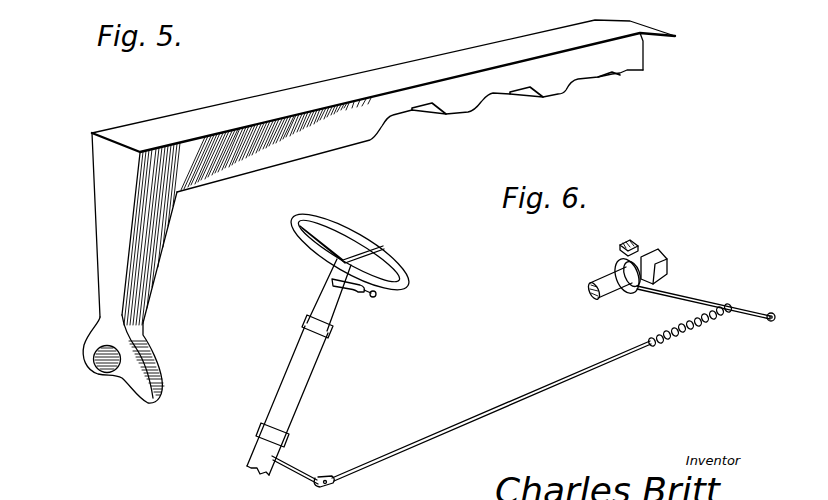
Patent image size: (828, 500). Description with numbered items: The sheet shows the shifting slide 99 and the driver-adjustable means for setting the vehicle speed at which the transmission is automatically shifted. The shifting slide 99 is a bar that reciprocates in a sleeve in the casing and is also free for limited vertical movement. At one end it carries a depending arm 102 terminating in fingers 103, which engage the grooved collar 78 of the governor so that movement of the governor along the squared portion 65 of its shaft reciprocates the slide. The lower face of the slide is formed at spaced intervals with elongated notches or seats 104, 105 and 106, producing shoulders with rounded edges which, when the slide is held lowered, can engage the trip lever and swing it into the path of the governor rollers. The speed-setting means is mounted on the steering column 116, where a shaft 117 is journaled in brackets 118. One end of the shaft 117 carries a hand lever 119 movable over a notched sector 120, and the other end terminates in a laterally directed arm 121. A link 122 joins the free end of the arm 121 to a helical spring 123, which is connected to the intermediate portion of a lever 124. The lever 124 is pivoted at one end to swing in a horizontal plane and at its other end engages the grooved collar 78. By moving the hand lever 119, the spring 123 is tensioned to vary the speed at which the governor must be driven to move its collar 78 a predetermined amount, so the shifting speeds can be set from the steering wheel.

In FIG. 5, the shifting slide 99 is at (302, 92).
In FIG. 5, the depending arm 102 is at (110, 223).
In FIG. 6, the depending arm 102 is at (636, 248).
In FIG. 5, the fingers 103 is at (165, 370).
In FIG. 6, the fingers 103 is at (658, 260).
In FIG. 5, the notch or seat 104 is at (597, 78).
In FIG. 5, the notch or seat 105 is at (503, 97).
In FIG. 5, the notch or seat 106 is at (411, 113).
In FIG. 6, the steering column 116 is at (292, 372).
In FIG. 6, the shaft 117 is at (305, 388).
In FIG. 6, the brackets 118 is at (306, 318).
In FIG. 6, the hand lever 119 is at (376, 297).
In FIG. 6, the notched sector 120 is at (347, 291).
In FIG. 6, the laterally directed arm 121 is at (303, 468).
In FIG. 6, the link 122 is at (515, 400).
In FIG. 6, the helical spring 123 is at (692, 332).
In FIG. 6, the lever 124 is at (685, 297).
In FIG. 6, the squared portion of the shaft 65 is at (603, 297).
In FIG. 6, the grooved collar 78 is at (633, 293).